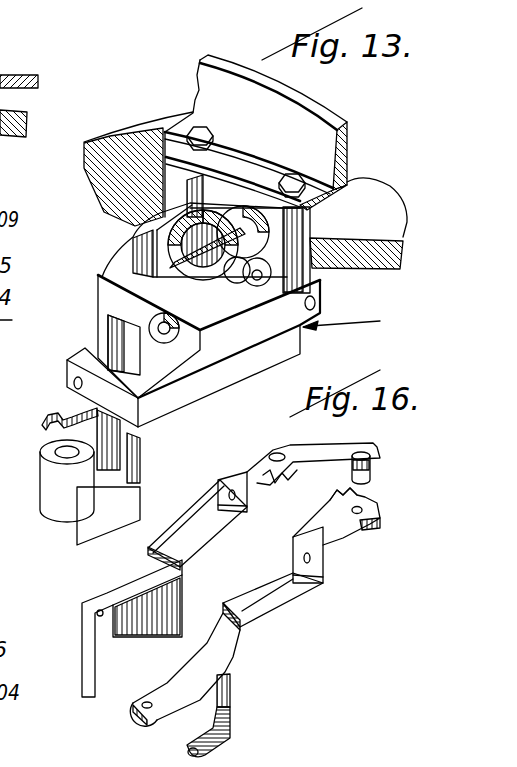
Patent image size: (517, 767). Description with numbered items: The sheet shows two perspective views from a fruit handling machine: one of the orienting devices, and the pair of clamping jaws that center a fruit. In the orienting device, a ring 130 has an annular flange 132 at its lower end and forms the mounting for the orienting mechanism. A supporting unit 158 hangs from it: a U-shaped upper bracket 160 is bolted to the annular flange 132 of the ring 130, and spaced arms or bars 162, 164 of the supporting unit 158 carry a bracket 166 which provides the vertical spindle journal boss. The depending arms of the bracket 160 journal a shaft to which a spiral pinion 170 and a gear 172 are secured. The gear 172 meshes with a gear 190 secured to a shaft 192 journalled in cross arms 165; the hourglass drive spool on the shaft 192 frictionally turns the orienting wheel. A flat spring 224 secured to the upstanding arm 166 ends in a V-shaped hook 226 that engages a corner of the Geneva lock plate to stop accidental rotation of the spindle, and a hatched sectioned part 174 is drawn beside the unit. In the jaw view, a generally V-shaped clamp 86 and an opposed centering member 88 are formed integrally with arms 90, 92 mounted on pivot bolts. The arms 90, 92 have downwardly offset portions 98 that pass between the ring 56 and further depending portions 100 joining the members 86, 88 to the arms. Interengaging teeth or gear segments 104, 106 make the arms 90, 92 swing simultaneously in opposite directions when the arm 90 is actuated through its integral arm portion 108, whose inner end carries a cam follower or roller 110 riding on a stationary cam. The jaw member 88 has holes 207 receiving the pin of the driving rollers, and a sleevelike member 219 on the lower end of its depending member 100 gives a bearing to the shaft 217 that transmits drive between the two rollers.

In FIG. 13, the ring 130 is at (347, 141).
In FIG. 13, the annular flange 132 is at (347, 180).
In FIG. 13, the spiral pinion 170 is at (203, 207).
In FIG. 13, the gear 190 is at (250, 210).
In FIG. 13, the U-shaped upper bracket 160 is at (137, 212).
In FIG. 13, the arm or bar 162 is at (122, 256).
In FIG. 13, the shaft 192 is at (175, 277).
In FIG. 13, the cross arms 165 is at (127, 303).
In FIG. 13, the arm or bar 164 is at (255, 320).
In FIG. 13, the bracket 166 is at (130, 437).
In FIG. 13, the gear 172 is at (240, 288).
In FIG. 13, the disc 174 is at (360, 264).
In FIG. 13, the supporting unit 158 is at (360, 320).
In FIG. 13, the flat spring 224 is at (67, 403).
In FIG. 13, the V-shaped hook 226 is at (40, 427).
In FIG. 13, the ring 56 is at (50, 507).
In FIG. 13, the shaft 217 is at (12, 241).
In FIG. 16, the V-shaped clamp 86 is at (70, 598).
In FIG. 16, the centering member 88 is at (225, 676).
In FIG. 16, the arm 90 is at (243, 470).
In FIG. 16, the arm 92 is at (327, 534).
In FIG. 16, the downwardly offset portions 98 is at (182, 533).
In FIG. 16, the depending portions 100 is at (230, 628).
In FIG. 16, the teeth or gear segment 104 is at (277, 484).
In FIG. 16, the teeth or gear segment 106 is at (333, 503).
In FIG. 16, the arm portion 108 is at (302, 449).
In FIG. 16, the cam follower or roller 110 is at (373, 471).
In FIG. 16, the hole 207 is at (147, 702).
In FIG. 16, the sleevelike member 219 is at (230, 738).